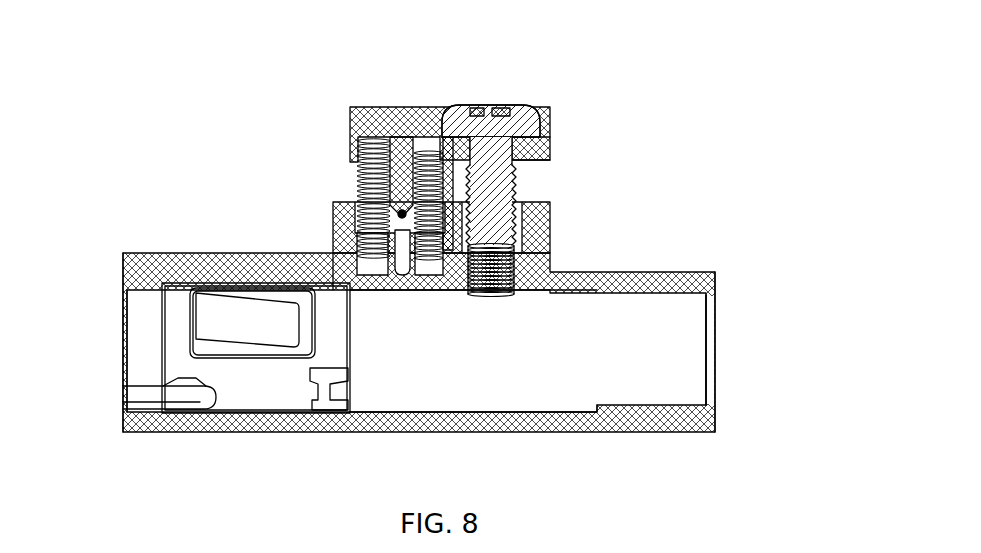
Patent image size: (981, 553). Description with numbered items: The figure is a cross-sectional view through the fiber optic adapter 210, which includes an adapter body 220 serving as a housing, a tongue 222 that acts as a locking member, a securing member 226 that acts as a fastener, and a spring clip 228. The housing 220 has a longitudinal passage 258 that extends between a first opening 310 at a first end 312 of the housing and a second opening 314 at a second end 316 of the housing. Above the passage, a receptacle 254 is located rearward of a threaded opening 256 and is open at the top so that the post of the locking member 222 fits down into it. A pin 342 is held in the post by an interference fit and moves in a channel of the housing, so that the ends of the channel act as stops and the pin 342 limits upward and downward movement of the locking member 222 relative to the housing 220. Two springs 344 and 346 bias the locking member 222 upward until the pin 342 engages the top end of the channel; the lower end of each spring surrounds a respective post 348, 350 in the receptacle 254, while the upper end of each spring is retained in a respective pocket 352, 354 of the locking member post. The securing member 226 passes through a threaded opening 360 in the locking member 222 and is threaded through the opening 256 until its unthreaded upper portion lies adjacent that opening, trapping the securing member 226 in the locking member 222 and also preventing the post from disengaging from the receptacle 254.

The fiber optic adapter 210 is at (183, 170).
The adapter body 220 is at (612, 272).
The tongue 222 is at (350, 108).
The securing member 226 is at (520, 108).
The spring clip 228 is at (268, 388).
The receptacle 254 is at (355, 268).
The threaded opening 256 is at (512, 272).
The longitudinal passage 258 is at (489, 363).
The first opening 310 is at (708, 292).
The first end 312 is at (706, 272).
The second opening 314 is at (123, 408).
The second end 316 is at (124, 255).
The pin 342 is at (333, 210).
The spring 344 is at (385, 213).
The spring 346 is at (428, 158).
The post 348 is at (360, 245).
The post 350 is at (440, 257).
The pocket 352 is at (358, 145).
The pocket 354 is at (402, 208).
The opening 360 is at (513, 152).